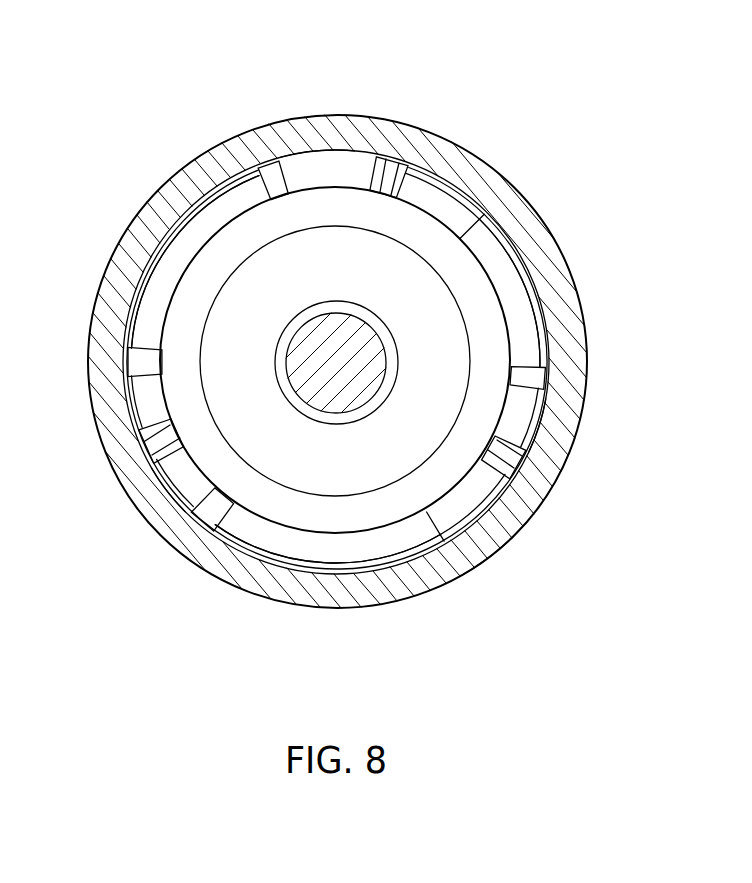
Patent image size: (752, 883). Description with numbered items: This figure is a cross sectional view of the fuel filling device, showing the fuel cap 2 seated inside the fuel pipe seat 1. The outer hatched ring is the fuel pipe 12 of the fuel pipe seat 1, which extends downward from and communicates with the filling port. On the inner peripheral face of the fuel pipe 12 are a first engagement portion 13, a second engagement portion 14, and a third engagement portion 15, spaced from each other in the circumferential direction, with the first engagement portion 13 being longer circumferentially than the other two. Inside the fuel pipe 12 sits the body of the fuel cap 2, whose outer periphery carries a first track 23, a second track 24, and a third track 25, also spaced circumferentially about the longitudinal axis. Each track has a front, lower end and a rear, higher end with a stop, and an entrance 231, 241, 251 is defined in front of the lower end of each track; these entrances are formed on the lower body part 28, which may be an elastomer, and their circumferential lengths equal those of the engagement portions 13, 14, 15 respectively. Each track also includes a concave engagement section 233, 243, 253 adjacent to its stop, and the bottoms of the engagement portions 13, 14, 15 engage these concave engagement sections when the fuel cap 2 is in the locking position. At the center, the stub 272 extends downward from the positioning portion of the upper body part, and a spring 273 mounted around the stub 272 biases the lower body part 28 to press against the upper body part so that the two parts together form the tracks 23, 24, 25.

The fuel pipe seat 1 is at (447, 138).
The fuel pipe 12 is at (505, 556).
The first engagement portion 13 is at (315, 165).
The second engagement portion 14 is at (177, 478).
The third engagement portion 15 is at (546, 428).
The fuel cap 2 is at (195, 378).
The first track 23 is at (170, 263).
The entrance 231 is at (262, 187).
The concave engagement section 233 is at (157, 348).
The second track 24 is at (366, 548).
The entrance 241 is at (214, 522).
The concave engagement section 243 is at (430, 547).
The third track 25 is at (508, 290).
The entrance 251 is at (530, 364).
The concave engagement section 253 is at (478, 236).
The lower body part 28 is at (307, 517).
The stub 272 is at (340, 381).
The spring 273 is at (338, 301).